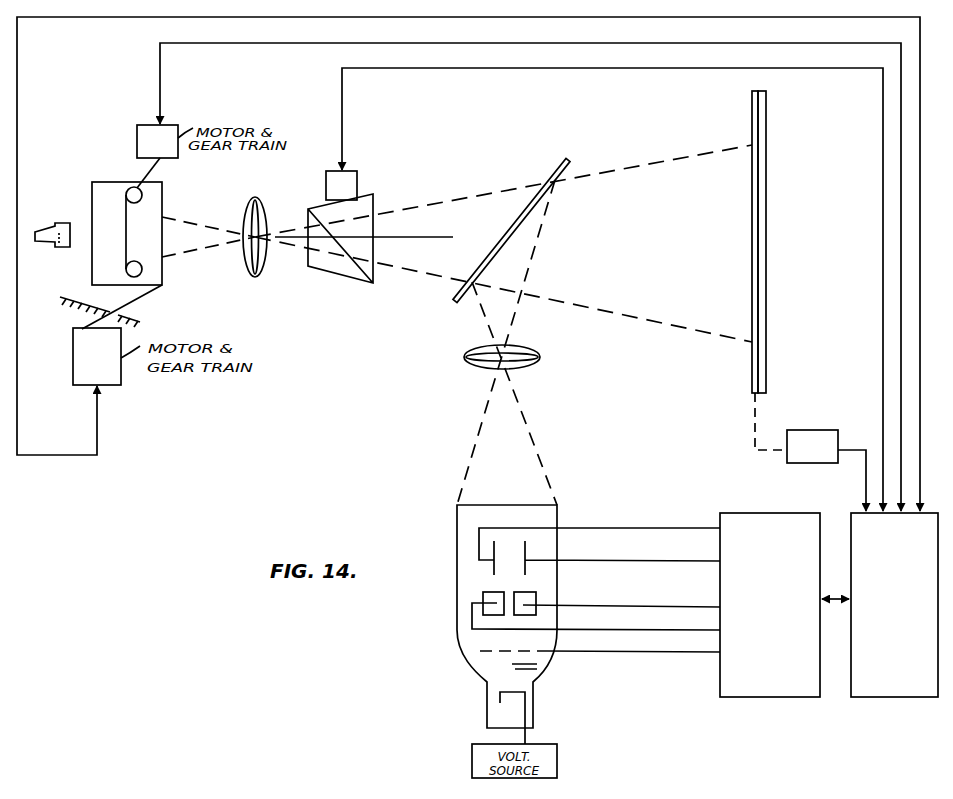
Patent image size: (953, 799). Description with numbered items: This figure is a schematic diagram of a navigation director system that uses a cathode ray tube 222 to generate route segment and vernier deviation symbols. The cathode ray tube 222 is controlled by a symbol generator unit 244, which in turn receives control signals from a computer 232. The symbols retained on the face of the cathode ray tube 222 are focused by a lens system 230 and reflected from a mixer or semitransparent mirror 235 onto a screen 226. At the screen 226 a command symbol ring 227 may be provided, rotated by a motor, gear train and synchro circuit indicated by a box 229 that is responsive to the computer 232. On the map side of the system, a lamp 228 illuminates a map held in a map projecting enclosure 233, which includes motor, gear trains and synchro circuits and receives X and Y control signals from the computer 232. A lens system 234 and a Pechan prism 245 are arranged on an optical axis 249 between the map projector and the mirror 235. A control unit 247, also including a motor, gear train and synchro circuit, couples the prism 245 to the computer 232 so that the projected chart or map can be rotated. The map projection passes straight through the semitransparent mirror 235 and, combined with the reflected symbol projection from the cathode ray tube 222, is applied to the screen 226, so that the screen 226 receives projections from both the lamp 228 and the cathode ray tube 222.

The cathode ray tube 222 is at (487, 672).
The screen 226 is at (766, 105).
The command symbol ring 227 is at (753, 98).
The lamp 228 is at (53, 223).
The motor, gear train and synchro circuit box 229 is at (787, 457).
The lens system 230 is at (538, 352).
The computer 232 is at (877, 683).
The map projecting enclosure 233 is at (91, 257).
The lens system 234 is at (258, 198).
The semitransparent mirror 235 is at (562, 162).
The symbol generator unit 244 is at (748, 683).
The Pechan prism 245 is at (340, 271).
The control unit 247 is at (357, 177).
The optical axis 249 is at (387, 239).